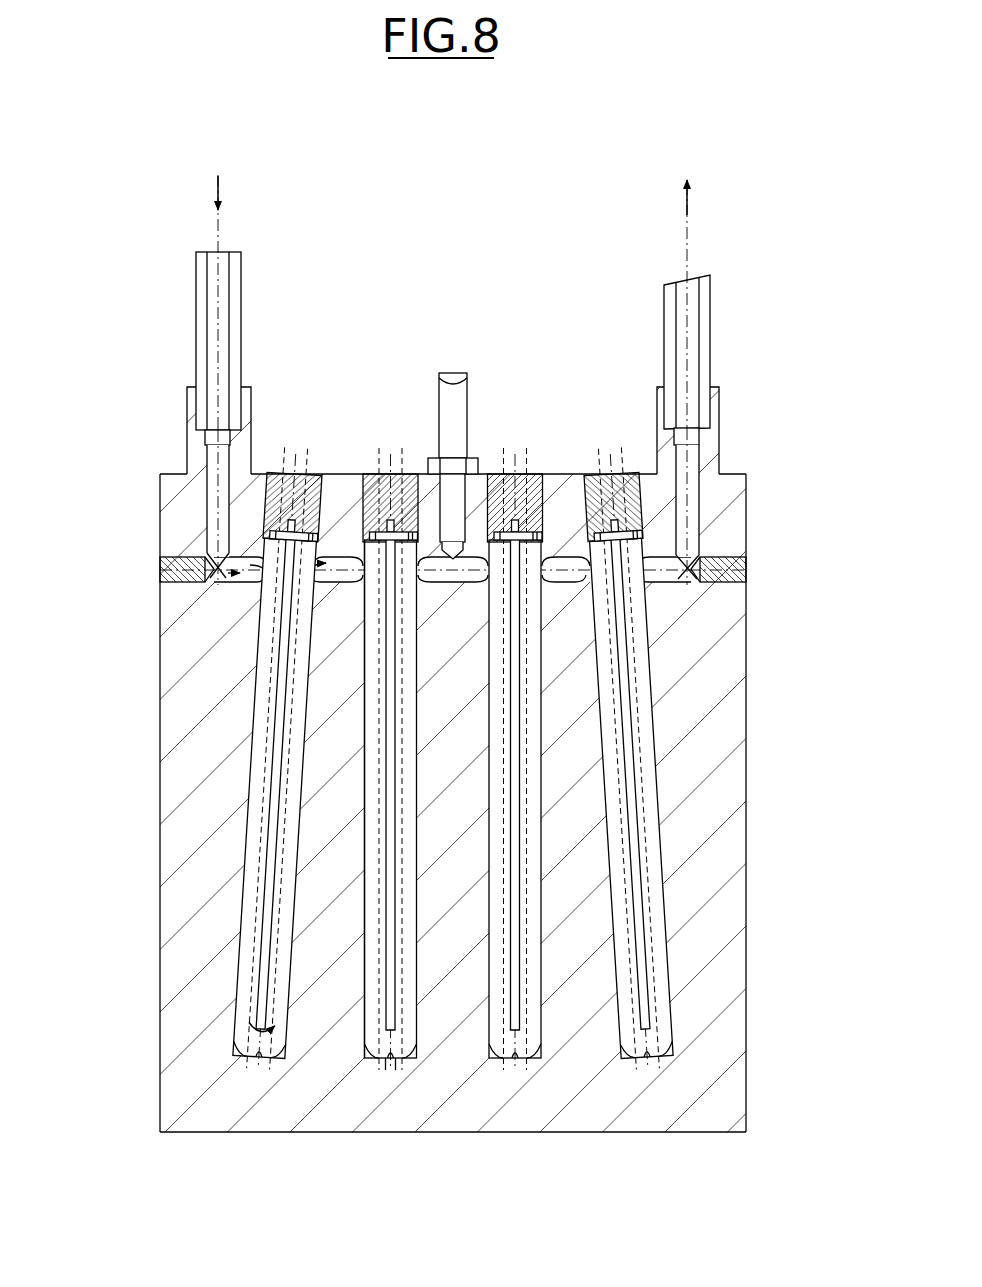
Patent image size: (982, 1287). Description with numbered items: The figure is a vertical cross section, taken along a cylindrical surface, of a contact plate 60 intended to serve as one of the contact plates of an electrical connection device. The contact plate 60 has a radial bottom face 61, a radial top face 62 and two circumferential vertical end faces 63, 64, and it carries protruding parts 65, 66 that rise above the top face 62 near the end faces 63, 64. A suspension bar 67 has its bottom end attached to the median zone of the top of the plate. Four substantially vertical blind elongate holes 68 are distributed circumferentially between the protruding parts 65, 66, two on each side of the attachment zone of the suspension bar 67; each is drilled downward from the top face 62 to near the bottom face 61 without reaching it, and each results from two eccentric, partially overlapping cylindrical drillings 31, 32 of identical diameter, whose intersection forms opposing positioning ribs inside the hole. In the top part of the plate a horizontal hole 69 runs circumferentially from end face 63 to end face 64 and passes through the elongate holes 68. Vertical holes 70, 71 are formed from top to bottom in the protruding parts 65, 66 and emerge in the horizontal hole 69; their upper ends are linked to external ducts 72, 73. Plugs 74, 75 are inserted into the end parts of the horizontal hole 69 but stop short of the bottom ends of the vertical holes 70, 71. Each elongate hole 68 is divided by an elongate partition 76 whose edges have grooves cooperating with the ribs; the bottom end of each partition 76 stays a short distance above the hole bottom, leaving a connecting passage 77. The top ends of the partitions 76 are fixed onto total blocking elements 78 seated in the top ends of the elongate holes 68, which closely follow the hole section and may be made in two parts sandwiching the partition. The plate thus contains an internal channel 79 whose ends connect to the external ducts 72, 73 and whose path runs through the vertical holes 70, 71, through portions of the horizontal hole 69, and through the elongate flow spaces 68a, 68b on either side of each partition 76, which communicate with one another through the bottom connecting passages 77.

The contact plate 60 is at (491, 788).
The radial bottom face 61 is at (170, 1133).
The radial top face 62 is at (560, 473).
The circumferential vertical end face 63 is at (159, 812).
The circumferential vertical end face 64 is at (747, 812).
The protruding part 65 is at (187, 437).
The protruding part 66 is at (719, 437).
The suspension bar 67 is at (455, 380).
The blind elongate hole 68 is at (305, 865).
The elongate flow space 68a is at (328, 819).
The elongate flow space 68b is at (442, 819).
The horizontal hole 69 is at (345, 572).
The vertical hole 70 is at (206, 532).
The vertical hole 71 is at (695, 532).
The external duct 72 is at (196, 320).
The external duct 73 is at (710, 320).
The plug 74 is at (185, 575).
The plug 75 is at (733, 575).
The elongate partition 76 is at (395, 690).
The connecting passage 77 is at (381, 1121).
The total blocking element 78 is at (361, 808).
The internal channel 79 is at (243, 878).
The cylindrical drilling 31 is at (352, 1117).
The cylindrical drilling 32 is at (417, 1117).